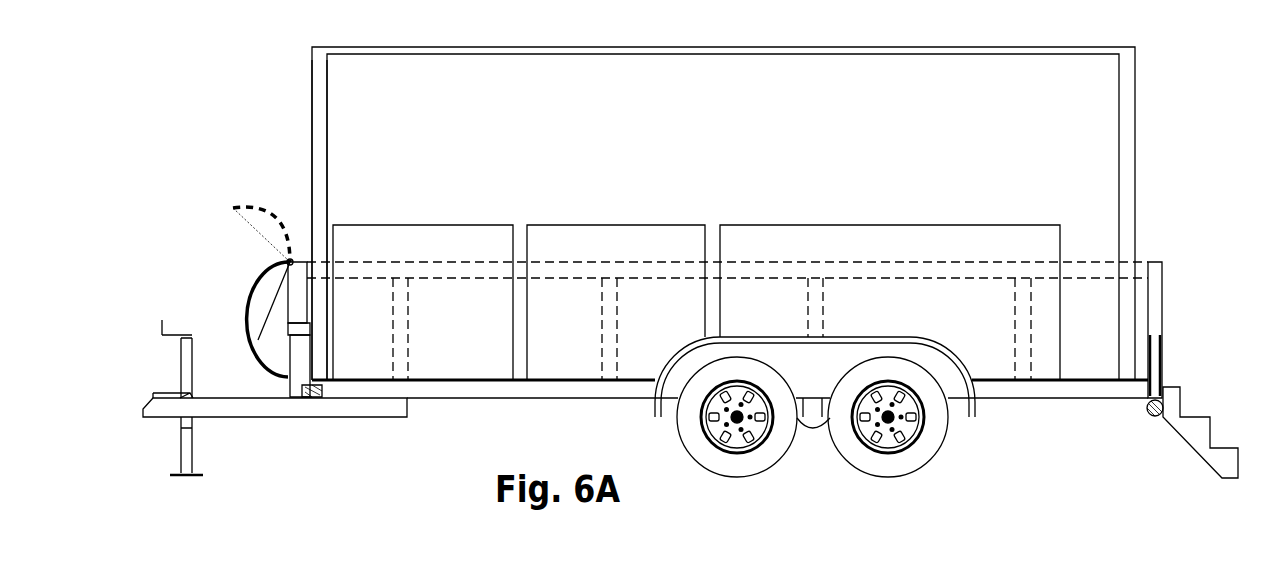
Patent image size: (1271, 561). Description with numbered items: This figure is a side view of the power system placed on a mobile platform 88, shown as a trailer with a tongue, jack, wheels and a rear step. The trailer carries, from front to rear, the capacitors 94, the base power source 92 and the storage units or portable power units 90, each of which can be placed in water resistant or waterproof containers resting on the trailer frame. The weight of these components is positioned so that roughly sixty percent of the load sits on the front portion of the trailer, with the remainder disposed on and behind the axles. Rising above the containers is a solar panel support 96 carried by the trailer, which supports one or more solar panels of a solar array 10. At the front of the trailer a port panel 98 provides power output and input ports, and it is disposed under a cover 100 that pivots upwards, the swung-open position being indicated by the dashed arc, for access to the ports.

The solar array 10 is at (793, 48).
The mobile platform 88 is at (603, 399).
The portable power units 90 is at (752, 225).
The base power source 92 is at (595, 225).
The capacitors 94 is at (405, 225).
The solar panel support 96 is at (312, 153).
The port panel 98 is at (258, 284).
The cover 100 is at (258, 278).